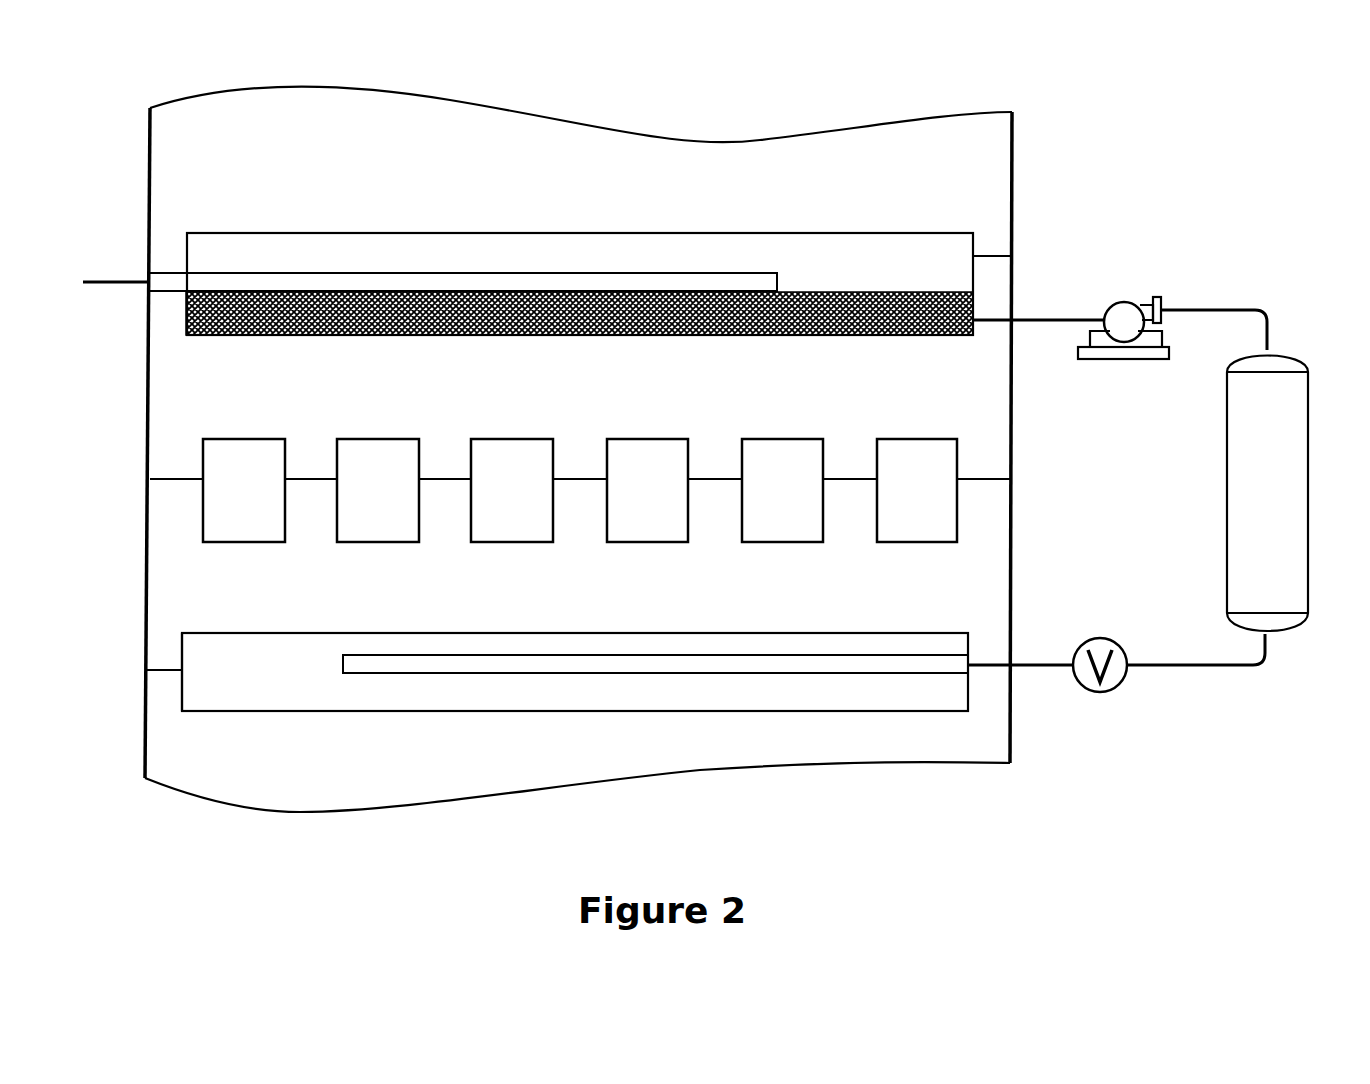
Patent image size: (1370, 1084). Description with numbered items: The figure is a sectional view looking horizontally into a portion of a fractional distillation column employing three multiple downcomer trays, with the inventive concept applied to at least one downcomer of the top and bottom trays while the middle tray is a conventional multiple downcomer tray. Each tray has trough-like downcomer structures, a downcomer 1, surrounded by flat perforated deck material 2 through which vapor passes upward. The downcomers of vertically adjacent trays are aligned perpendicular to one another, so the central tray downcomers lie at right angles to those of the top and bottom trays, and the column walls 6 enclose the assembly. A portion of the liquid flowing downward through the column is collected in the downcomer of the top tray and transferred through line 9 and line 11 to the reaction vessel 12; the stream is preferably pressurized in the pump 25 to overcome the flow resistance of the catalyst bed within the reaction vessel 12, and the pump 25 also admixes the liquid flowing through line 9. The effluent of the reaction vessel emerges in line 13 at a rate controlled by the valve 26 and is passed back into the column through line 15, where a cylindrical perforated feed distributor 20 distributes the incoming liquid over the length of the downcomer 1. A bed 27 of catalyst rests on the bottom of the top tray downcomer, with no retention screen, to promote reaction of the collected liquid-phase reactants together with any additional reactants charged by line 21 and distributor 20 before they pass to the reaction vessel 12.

The downcomer 1 is at (167, 270).
The perforated deck material 2 is at (172, 475).
The housing enclosure 6 is at (147, 530).
The line 9 is at (1057, 322).
The line 11 is at (1180, 307).
The reaction vessel 12 is at (1308, 400).
The line 13 is at (1148, 663).
The line 15 is at (1018, 668).
The cylindrical perforated feed distributor 20 is at (730, 282).
The line 21 is at (102, 280).
The pump 25 is at (1105, 360).
The valve 26 is at (1102, 640).
The catalyst bed 27 is at (835, 293).